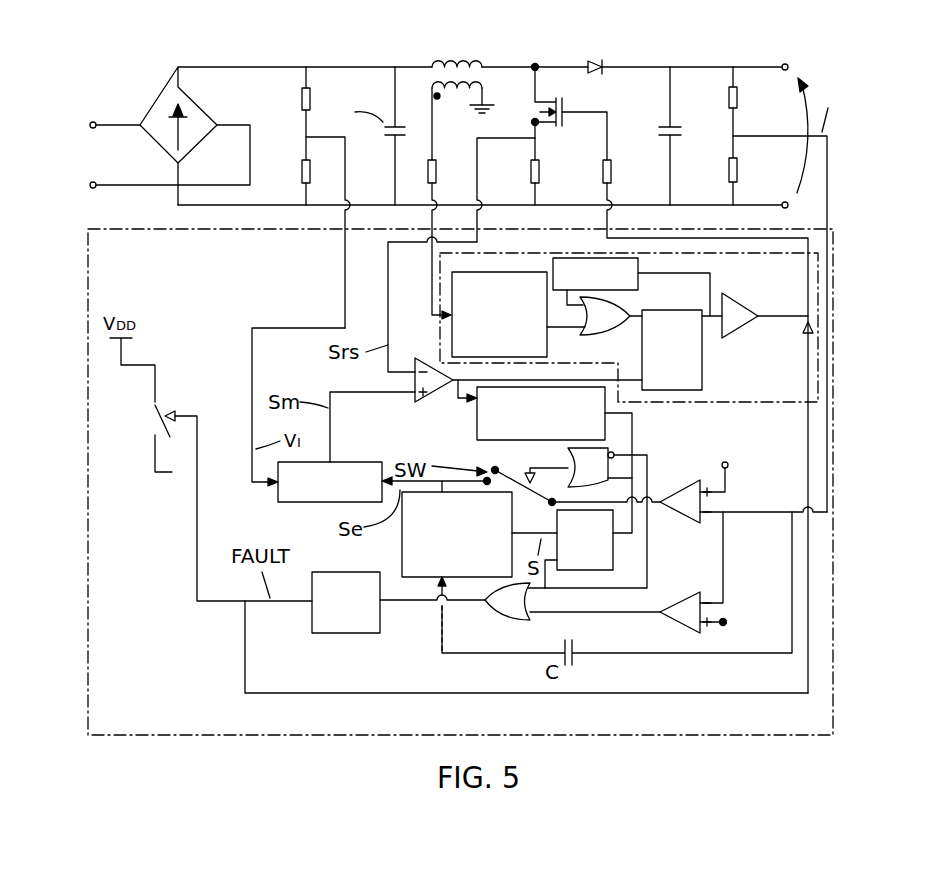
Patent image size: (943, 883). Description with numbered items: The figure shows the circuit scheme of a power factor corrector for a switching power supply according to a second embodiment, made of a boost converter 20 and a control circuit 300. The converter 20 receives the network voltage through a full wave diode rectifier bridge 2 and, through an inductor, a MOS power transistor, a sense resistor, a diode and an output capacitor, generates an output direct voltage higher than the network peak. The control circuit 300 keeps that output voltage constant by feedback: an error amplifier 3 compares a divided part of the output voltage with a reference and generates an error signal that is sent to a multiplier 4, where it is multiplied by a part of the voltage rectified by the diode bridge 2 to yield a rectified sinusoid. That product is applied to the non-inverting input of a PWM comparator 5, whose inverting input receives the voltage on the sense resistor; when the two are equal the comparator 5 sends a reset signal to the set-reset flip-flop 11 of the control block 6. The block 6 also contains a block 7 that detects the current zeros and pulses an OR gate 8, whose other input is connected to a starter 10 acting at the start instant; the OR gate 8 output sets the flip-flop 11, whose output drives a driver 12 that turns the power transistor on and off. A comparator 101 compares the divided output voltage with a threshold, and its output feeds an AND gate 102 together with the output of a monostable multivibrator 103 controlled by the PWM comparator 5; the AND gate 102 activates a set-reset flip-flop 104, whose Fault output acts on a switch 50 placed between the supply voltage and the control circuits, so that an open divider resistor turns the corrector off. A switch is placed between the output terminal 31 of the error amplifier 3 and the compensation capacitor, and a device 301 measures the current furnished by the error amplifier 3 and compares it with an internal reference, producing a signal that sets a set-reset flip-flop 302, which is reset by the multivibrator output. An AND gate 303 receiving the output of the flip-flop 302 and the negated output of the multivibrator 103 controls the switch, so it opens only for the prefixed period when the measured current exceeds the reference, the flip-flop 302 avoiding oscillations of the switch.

The full wave diode rectifier bridge 2 is at (160, 112).
The converter 20 is at (323, 50).
The control circuit 300 is at (87, 340).
The error amplifier 3 is at (706, 503).
The multiplier 4 is at (340, 462).
The PWM comparator 5 is at (412, 396).
The control block 6 is at (438, 332).
The zero current detector block 7 is at (548, 342).
The OR gate 8 is at (606, 334).
The starter 10 is at (640, 282).
The set-reset flip-flop 11 is at (690, 352).
The driver 12 is at (740, 305).
The output terminal 31 is at (658, 506).
The switch 50 is at (160, 424).
The comparator 101 is at (704, 616).
The AND gate 102 is at (510, 607).
The monostable multivibrator 103 is at (476, 418).
The set-reset flip-flop 104 is at (347, 622).
The current measuring device 301 is at (399, 565).
The set-reset flip-flop 302 is at (613, 556).
The AND gate 303 is at (567, 451).